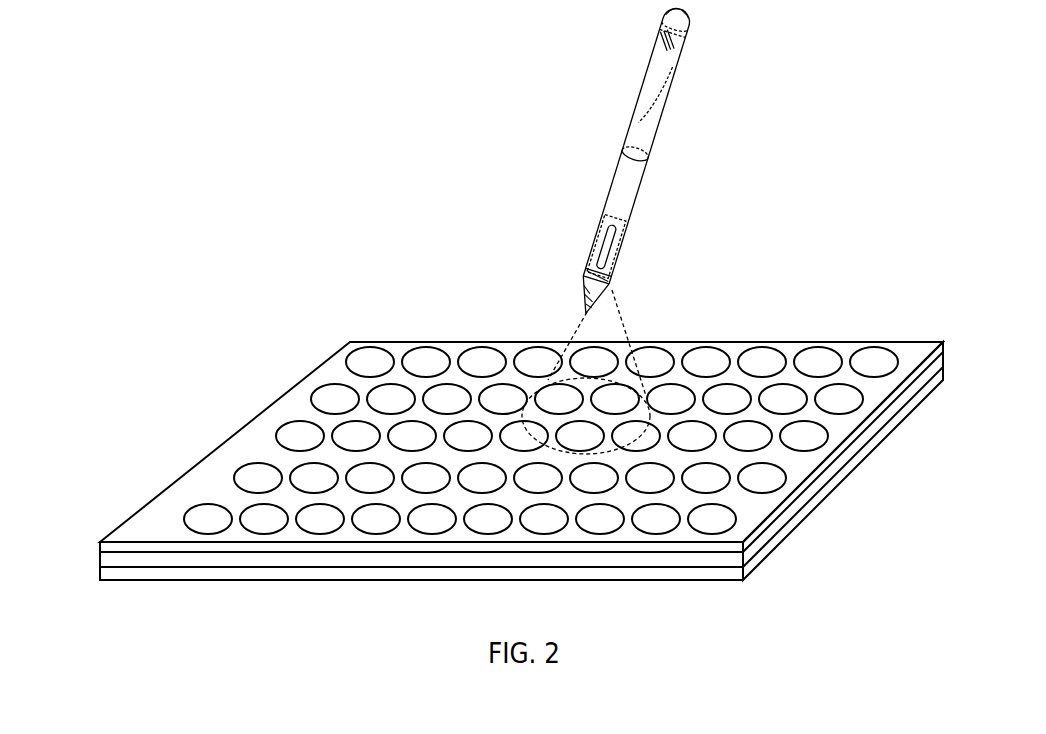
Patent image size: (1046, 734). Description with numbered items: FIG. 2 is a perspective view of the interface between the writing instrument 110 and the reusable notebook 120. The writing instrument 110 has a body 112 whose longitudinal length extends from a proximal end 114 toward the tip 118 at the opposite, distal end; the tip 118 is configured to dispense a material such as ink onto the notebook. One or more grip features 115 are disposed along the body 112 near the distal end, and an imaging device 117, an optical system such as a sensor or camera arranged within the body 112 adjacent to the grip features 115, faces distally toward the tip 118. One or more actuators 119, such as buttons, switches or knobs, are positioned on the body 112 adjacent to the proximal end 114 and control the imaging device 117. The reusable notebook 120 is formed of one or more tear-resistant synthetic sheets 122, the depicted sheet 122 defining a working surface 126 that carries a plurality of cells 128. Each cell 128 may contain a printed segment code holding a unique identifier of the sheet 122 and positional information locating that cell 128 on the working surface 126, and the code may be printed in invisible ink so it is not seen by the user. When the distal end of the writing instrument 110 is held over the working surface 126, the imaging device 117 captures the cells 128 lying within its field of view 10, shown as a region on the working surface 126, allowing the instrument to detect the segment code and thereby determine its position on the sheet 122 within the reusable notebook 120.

The field of view 10 is at (627, 315).
The writing instrument 110 is at (573, 108).
The body 112 is at (635, 153).
The proximal end 114 is at (677, 19).
The grip features 115 is at (606, 247).
The imaging device 117 is at (597, 276).
The tip 118 is at (591, 296).
The actuators 119 is at (670, 41).
The reusable notebook 120 is at (170, 275).
The sheets 122 is at (247, 562).
The working surface 126 is at (220, 480).
The cells 128 is at (760, 352).